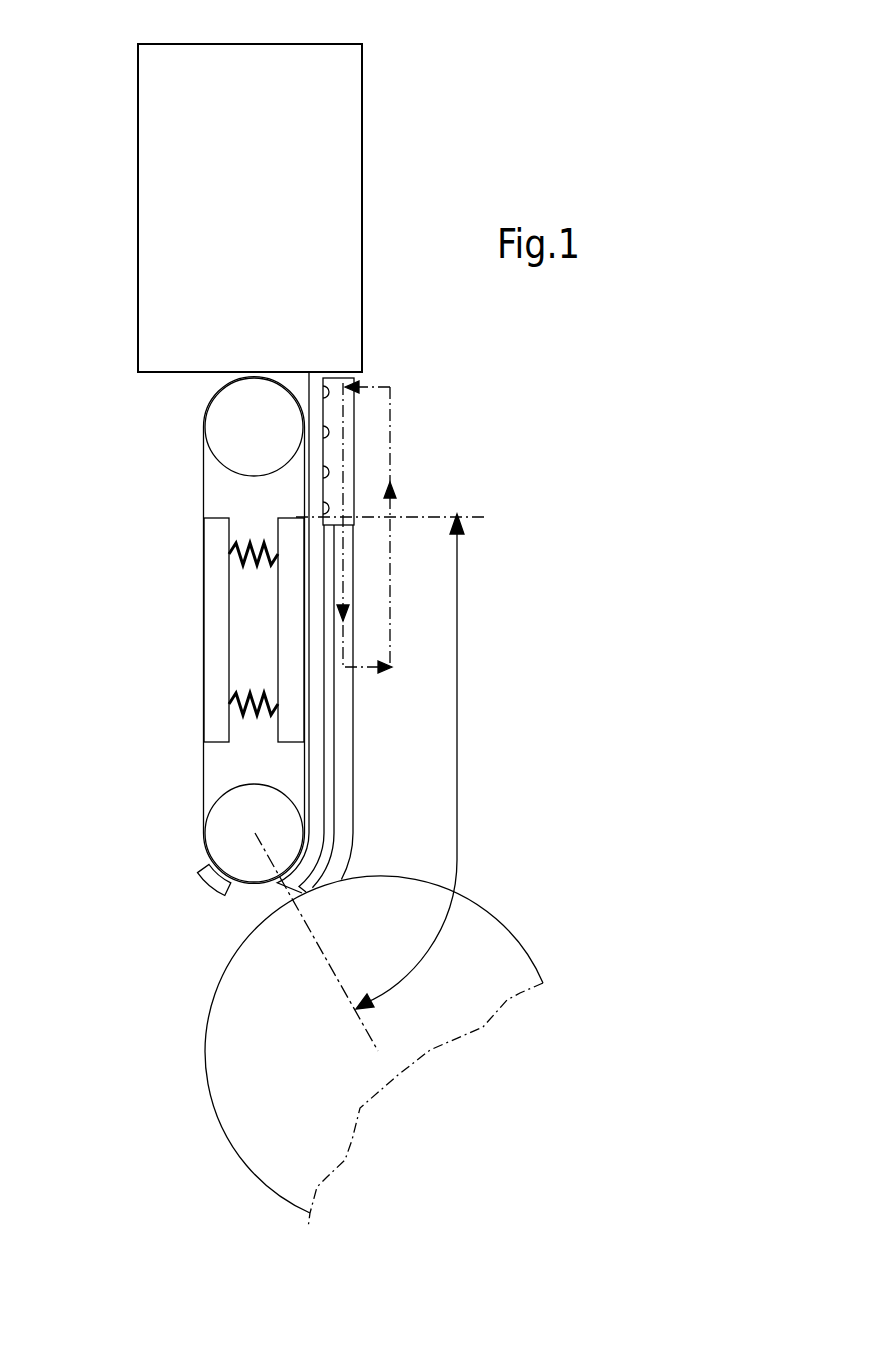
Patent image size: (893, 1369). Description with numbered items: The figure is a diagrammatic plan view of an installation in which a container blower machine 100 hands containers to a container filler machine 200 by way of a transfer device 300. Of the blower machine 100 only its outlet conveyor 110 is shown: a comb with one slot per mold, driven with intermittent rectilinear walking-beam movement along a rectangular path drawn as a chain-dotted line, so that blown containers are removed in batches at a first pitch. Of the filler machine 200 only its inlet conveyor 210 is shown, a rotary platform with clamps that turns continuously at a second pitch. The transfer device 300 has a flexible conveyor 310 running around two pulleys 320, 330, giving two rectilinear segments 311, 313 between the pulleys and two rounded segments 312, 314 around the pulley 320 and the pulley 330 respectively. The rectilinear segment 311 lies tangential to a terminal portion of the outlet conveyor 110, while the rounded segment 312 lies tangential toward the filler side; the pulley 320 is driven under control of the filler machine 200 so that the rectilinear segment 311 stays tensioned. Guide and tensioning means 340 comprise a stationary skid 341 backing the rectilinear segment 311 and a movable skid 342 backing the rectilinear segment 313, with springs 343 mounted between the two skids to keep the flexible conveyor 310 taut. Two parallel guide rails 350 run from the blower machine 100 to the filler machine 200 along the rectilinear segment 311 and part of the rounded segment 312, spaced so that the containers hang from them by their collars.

The container blower machine 100 is at (272, 209).
The outlet conveyor 110 is at (348, 442).
The container filler machine 200 is at (301, 871).
The inlet conveyor 210 is at (314, 1084).
The transfer device 300 is at (252, 645).
The flexible conveyor 310 is at (199, 630).
The rectilinear segment 311 is at (305, 727).
The rounded segment 312 is at (224, 897).
The rectilinear segment 313 is at (204, 605).
The rounded segment 314 is at (214, 396).
The pulley 320 is at (218, 837).
The pulley 330 is at (218, 427).
The guide and tensioning means 340 is at (277, 632).
The stationary skid 341 is at (290, 698).
The movable skid 342 is at (204, 702).
The springs 343 is at (255, 567).
The guide rails 350 is at (320, 823).